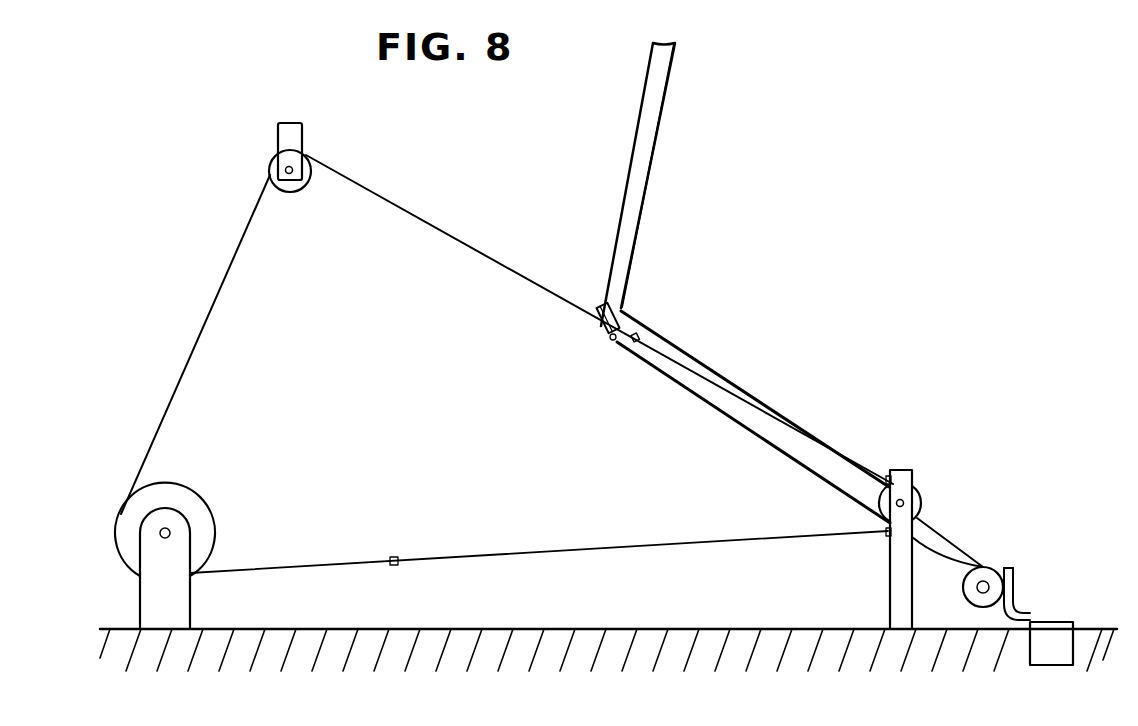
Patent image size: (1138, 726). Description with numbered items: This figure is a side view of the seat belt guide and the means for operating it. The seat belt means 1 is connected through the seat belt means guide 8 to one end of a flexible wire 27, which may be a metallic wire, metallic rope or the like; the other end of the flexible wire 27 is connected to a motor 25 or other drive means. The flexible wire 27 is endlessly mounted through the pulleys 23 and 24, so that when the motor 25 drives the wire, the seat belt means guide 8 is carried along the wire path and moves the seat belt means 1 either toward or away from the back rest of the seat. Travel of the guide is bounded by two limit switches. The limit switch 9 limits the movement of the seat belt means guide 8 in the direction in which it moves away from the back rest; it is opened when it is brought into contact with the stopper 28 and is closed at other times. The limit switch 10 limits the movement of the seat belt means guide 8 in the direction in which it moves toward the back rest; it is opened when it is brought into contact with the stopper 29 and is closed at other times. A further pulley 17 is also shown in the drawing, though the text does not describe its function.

The seat belt means 1 is at (632, 160).
The seat belt means guide 8 is at (609, 342).
The limit switch 9 is at (888, 535).
The limit switch 10 is at (888, 476).
The pulley 17 is at (992, 582).
The pulley 23 is at (293, 188).
The pulley 24 is at (921, 498).
The motor 25 is at (207, 525).
The flexible wire 27 is at (432, 230).
The stopper 28 is at (398, 565).
The stopper 29 is at (633, 343).